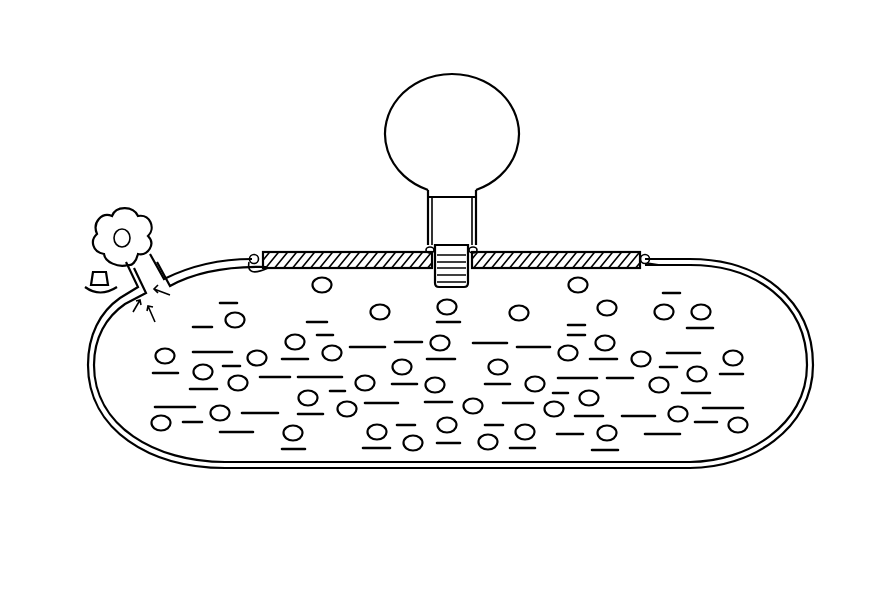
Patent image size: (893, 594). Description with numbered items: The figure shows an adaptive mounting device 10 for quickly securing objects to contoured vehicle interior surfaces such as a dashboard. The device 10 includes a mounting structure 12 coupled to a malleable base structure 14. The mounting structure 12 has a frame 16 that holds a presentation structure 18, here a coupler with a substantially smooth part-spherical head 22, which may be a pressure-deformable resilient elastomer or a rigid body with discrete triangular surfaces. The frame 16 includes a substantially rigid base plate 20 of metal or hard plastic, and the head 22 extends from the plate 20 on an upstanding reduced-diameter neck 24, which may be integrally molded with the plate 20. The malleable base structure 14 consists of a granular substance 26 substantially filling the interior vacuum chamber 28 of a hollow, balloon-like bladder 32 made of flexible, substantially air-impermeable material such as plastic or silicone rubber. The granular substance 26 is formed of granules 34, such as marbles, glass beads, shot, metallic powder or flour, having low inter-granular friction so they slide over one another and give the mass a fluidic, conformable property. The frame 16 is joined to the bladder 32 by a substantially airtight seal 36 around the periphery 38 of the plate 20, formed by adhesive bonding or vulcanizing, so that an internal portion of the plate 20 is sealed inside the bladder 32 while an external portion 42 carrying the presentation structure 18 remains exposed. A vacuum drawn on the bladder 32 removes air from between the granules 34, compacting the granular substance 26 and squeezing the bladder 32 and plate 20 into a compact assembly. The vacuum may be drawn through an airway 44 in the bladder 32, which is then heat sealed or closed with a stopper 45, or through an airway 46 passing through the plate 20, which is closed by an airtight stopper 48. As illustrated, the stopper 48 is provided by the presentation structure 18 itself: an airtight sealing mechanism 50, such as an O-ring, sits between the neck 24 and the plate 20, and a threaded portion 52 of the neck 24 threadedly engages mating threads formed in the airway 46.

The adaptive mounting device 10 is at (196, 84).
The mounting structure 12 is at (503, 132).
The malleable base structure 14 is at (812, 345).
The frame 16 is at (612, 251).
The presentation structure 18 is at (423, 80).
The base plate 20 is at (348, 251).
The part-spherical head 22 is at (467, 147).
The neck 24 is at (432, 224).
The granular substance 26 is at (746, 295).
The vacuum chamber 28 is at (772, 402).
The bladder 32 is at (168, 459).
The granules 34 is at (155, 428).
The airtight seal 36 is at (251, 255).
The periphery 38 is at (249, 257).
The external portion 42 is at (280, 251).
The airway 44 is at (153, 276).
The stopper 45 is at (90, 274).
The airway 46 is at (431, 252).
The airtight stopper 48 is at (442, 228).
The airtight sealing mechanism 50 is at (472, 252).
The threaded portion 52 is at (460, 268).